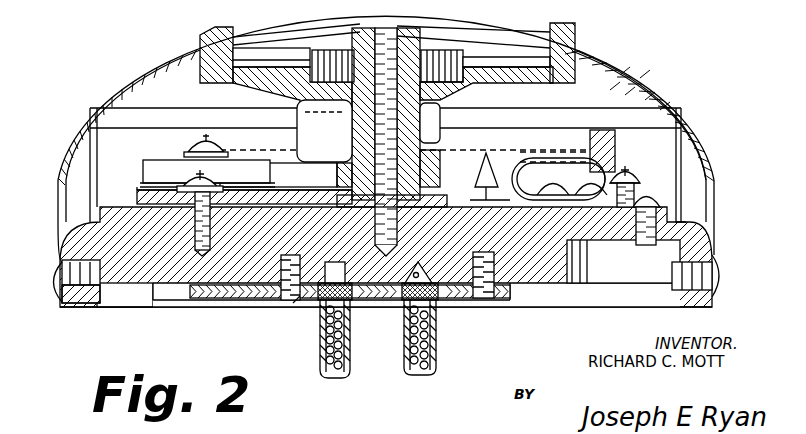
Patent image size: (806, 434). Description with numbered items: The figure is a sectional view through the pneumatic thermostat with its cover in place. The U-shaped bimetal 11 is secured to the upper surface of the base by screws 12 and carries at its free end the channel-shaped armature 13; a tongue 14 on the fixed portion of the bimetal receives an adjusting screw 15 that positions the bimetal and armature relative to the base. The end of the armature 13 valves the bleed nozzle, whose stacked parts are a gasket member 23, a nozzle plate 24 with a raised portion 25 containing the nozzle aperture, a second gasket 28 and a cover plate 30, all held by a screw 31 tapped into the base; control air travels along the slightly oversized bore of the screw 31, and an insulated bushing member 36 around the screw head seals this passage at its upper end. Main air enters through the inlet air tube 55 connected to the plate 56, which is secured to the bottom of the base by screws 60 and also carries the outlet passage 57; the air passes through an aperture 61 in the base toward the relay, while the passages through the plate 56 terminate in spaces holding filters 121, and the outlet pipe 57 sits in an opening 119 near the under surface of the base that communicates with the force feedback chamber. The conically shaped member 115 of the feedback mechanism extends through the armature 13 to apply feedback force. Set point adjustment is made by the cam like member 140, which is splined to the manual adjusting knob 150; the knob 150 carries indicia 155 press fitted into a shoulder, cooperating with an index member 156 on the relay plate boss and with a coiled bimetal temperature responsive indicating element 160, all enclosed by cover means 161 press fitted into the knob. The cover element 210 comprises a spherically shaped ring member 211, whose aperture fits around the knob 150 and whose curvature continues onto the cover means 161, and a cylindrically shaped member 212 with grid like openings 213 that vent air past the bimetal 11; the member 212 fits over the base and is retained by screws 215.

The thermal sensing element 11 is at (614, 175).
The screws 12 is at (548, 192).
The armature member 13 is at (580, 148).
The tongue 14 is at (641, 198).
The adjusting screw 15 is at (634, 178).
The gasket member 23 is at (137, 195).
The nozzle plate 24 is at (140, 187).
The raised portion 25 is at (276, 160).
The second gasket 28 is at (140, 183).
The cover plate 30 is at (143, 168).
The screw 31 is at (190, 146).
The insulated bushing member 36 is at (182, 160).
The inlet air tube 55 is at (318, 338).
The plate 56 is at (225, 299).
The outlet passage 57 is at (404, 339).
The screws 60 is at (292, 298).
The aperture 61 is at (293, 303).
The conically shaped member 115 is at (476, 173).
The opening 119 is at (423, 277).
The filters 121 is at (386, 303).
The cam like member 140 is at (347, 147).
The manual adjusting knob 150 is at (565, 47).
The indicia 155 is at (548, 50).
The index member 156 is at (420, 33).
The temperature responsive indicating element 160 is at (520, 57).
The cover means 161 is at (300, 32).
The cover element 210 is at (671, 72).
The spherically shaped ring member 211 is at (665, 105).
The cylindrically shaped member 212 is at (685, 205).
The grid like openings 213 is at (680, 192).
The screws 215 is at (50, 280).